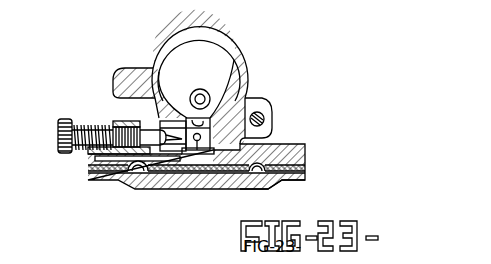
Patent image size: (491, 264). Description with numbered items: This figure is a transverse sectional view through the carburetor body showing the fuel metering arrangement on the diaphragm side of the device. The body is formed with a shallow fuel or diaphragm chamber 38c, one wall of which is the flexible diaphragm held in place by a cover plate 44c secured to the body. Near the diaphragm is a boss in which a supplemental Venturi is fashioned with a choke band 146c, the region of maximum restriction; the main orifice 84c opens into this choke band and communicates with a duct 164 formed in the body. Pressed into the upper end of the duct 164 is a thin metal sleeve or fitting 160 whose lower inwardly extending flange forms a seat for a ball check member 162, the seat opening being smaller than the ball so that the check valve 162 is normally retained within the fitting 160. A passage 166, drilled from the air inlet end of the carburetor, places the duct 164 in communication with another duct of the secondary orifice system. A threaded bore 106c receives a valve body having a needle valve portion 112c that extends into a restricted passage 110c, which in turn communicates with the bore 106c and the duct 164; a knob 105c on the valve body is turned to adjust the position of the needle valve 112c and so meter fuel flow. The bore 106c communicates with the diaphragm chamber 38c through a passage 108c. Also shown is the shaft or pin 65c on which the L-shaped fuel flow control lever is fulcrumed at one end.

The ball check member 162 is at (158, 70).
The main orifice 84c is at (194, 93).
The choke band 146c is at (215, 93).
The sleeve or fitting 160 is at (266, 106).
The shaft or pin 65c is at (265, 117).
The diaphragm chamber 38c is at (272, 143).
The restricted passage 110c is at (155, 116).
The threaded bore 106c is at (133, 118).
The knob 105c is at (58, 128).
The passage 108c is at (158, 156).
The needle valve portion 112c is at (180, 140).
The passage 166 is at (194, 141).
The duct or passage 164 is at (200, 153).
The cover plate 44c is at (246, 189).